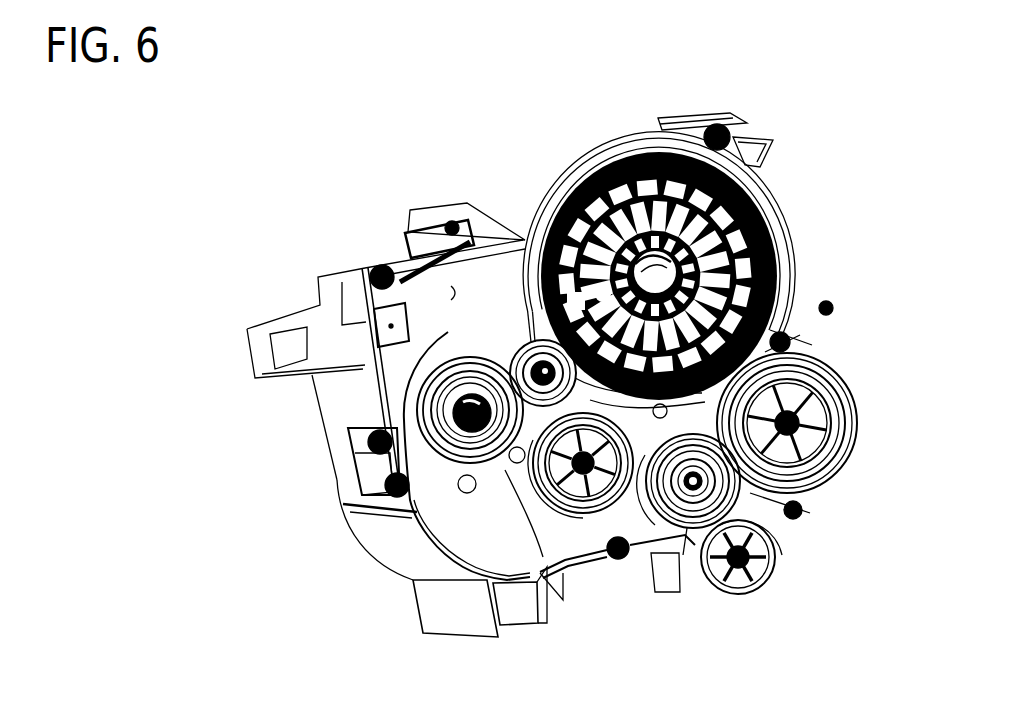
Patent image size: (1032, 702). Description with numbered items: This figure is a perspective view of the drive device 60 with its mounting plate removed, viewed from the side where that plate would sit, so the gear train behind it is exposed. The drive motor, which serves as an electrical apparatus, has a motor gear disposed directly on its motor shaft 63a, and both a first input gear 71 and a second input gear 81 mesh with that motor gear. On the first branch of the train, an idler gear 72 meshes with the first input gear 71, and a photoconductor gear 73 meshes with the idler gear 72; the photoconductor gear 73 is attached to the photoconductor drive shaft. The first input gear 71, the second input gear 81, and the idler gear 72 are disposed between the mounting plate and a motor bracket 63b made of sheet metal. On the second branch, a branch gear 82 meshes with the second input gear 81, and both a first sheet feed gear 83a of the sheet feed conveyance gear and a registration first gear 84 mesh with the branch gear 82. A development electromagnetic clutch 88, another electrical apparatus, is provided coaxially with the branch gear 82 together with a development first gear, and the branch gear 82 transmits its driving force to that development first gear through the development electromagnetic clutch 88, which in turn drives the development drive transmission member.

The drive device 60 is at (808, 105).
The motor shaft 63a is at (507, 490).
The motor bracket 63b is at (403, 367).
The first input gear 71 is at (458, 360).
The idler gear 72 is at (517, 337).
The photoconductor gear 73 is at (597, 187).
The second input gear 81 is at (547, 572).
The branch gear 82 is at (692, 565).
The first sheet feed gear 83a is at (773, 588).
The registration first gear 84 is at (837, 368).
The development electromagnetic clutch 88 is at (807, 347).